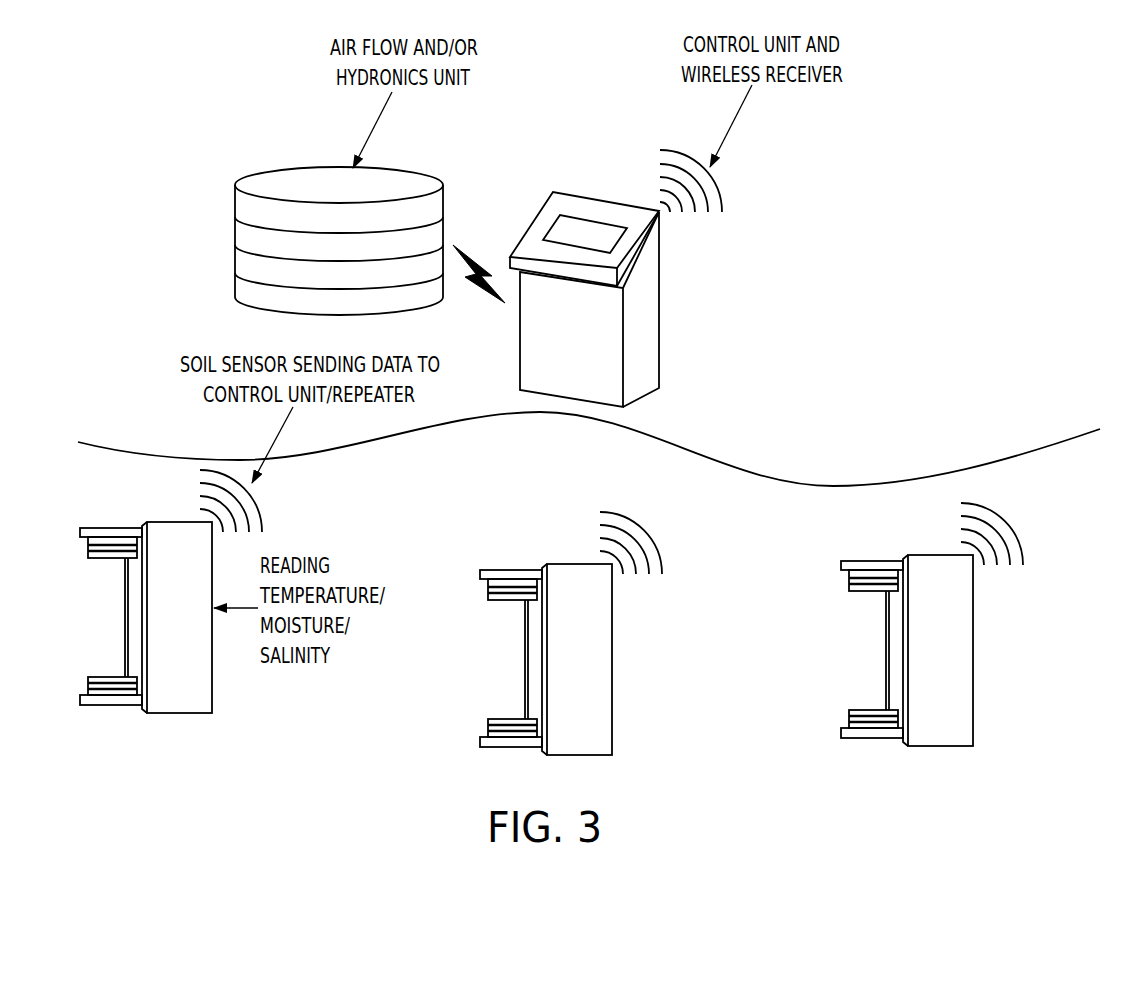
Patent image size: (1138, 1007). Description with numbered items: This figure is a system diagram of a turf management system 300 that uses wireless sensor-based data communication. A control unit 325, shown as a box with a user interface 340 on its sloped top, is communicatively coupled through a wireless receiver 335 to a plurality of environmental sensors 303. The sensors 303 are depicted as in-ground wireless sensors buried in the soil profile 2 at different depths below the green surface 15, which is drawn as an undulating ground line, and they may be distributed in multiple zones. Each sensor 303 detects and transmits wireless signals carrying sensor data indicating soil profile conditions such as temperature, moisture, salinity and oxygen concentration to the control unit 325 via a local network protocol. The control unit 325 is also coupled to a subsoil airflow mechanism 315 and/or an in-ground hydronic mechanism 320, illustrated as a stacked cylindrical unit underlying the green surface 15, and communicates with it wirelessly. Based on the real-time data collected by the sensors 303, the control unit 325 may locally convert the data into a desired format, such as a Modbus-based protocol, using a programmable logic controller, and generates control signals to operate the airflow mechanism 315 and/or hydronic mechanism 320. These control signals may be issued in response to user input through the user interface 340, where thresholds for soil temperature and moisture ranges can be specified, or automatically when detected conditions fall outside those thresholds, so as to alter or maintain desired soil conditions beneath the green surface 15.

The turf management system 300 is at (1032, 97).
The subsoil airflow mechanism 315 is at (258, 172).
The in-ground hydronic mechanism 320 is at (339, 215).
The control unit 325 is at (583, 197).
The wireless receiver 335 is at (591, 275).
The user interface 340 is at (560, 230).
The environmental sensor 303 is at (207, 623).
The green surface 15 is at (848, 487).
The soil profile 2 is at (729, 646).